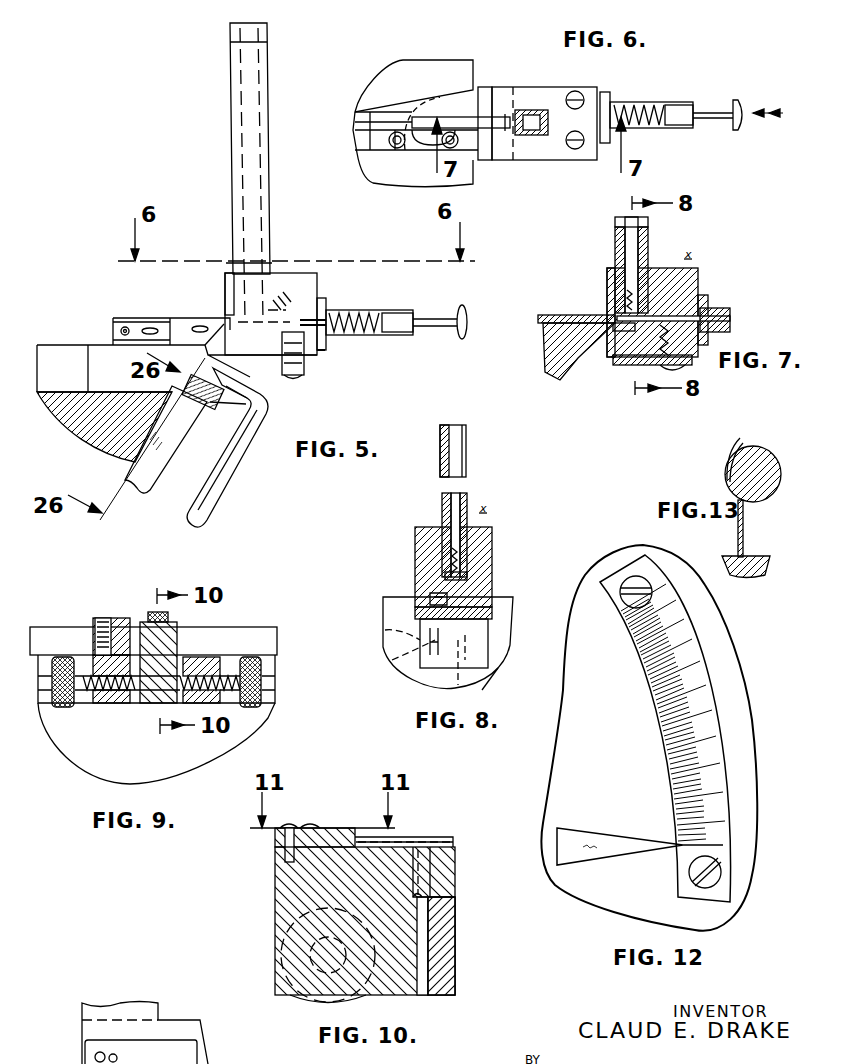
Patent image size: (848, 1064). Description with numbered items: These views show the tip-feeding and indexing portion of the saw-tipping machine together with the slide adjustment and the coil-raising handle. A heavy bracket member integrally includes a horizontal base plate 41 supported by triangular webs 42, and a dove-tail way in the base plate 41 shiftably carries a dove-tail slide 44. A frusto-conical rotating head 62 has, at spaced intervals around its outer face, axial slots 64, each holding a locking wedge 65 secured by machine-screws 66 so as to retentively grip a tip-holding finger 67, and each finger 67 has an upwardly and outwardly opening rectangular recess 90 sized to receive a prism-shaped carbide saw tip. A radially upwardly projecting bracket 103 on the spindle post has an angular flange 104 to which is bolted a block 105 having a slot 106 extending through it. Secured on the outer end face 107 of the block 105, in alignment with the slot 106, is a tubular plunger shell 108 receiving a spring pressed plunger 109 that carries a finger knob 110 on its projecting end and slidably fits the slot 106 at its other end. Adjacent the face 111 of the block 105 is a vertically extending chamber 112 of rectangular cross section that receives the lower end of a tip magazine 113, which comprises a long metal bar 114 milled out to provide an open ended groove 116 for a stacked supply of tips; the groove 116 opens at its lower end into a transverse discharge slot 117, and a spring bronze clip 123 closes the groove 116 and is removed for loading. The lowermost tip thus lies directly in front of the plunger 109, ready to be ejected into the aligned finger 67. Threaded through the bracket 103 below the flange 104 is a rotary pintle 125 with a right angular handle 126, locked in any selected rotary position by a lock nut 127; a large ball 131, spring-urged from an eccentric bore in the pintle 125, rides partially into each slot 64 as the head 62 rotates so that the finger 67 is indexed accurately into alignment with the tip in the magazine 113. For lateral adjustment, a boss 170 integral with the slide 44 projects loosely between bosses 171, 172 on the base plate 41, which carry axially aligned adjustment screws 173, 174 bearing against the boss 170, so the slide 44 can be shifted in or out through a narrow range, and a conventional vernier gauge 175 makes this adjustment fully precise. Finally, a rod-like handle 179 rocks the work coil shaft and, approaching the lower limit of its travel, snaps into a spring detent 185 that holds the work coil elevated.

In FIG. 9, the horizontal base plate 41 is at (270, 690).
In FIG. 10, the horizontal base plate 41 is at (456, 944).
In FIG. 9, the triangular webs 42 is at (232, 740).
In FIG. 9, the dove-tail slide 44 is at (270, 648).
In FIG. 10, the dove-tail slide 44 is at (454, 892).
In FIG. 5, the rotating head 62 is at (58, 425).
In FIG. 6, the rotating head 62 is at (420, 184).
In FIG. 7, the rotating head 62 is at (556, 382).
In FIG. 8, the rotating head 62 is at (508, 662).
In FIG. 5, the axial slots 64 is at (54, 348).
In FIG. 6, the axial slots 64 is at (360, 152).
In FIG. 8, the axial slots 64 is at (485, 688).
In FIG. 6, the locking wedge 65 is at (400, 148).
In FIG. 8, the locking wedge 65 is at (388, 640).
In FIG. 6, the machine-screws 66 is at (432, 124).
In FIG. 8, the machine-screws 66 is at (420, 660).
In FIG. 5, the tip-holding fingers 67 is at (140, 320).
In FIG. 6, the tip-holding fingers 67 is at (385, 114).
In FIG. 7, the tip-holding fingers 67 is at (540, 368).
In FIG. 8, the tip-holding fingers 67 is at (458, 684).
In FIG. 5, the rectangular recess 90 is at (212, 318).
In FIG. 6, the rectangular recess 90 is at (503, 114).
In FIG. 5, the bracket 103 is at (136, 491).
In FIG. 8, the bracket 103 is at (418, 680).
In FIG. 5, the angular flange 104 is at (304, 362).
In FIG. 6, the angular flange 104 is at (487, 160).
In FIG. 7, the angular flange 104 is at (618, 367).
In FIG. 8, the angular flange 104 is at (495, 614).
In FIG. 5, the block 105 is at (318, 288).
In FIG. 6, the block 105 is at (566, 160).
In FIG. 7, the block 105 is at (700, 278).
In FIG. 8, the block 105 is at (493, 541).
In FIG. 5, the slot 106 is at (322, 351).
In FIG. 5, the outer end face 107 is at (321, 303).
In FIG. 5, the tubular plunger shell 108 is at (403, 311).
In FIG. 5, the spring pressed plunger 109 is at (433, 330).
In FIG. 6, the spring pressed plunger 109 is at (710, 108).
In FIG. 7, the spring pressed plunger 109 is at (706, 318).
In FIG. 8, the spring pressed plunger 109 is at (470, 580).
In FIG. 5, the finger knob 110 is at (468, 313).
In FIG. 6, the finger knob 110 is at (741, 131).
In FIG. 5, the face 111 is at (225, 282).
In FIG. 5, the vertically extending chamber 112 is at (272, 284).
In FIG. 7, the vertically extending chamber 112 is at (617, 277).
In FIG. 5, the tip magazine 113 is at (272, 80).
In FIG. 8, the tip magazine 113 is at (486, 435).
In FIG. 6, the long metal bar 114 is at (572, 92).
In FIG. 7, the long metal bar 114 is at (616, 243).
In FIG. 8, the long metal bar 114 is at (441, 503).
In FIG. 5, the open ended groove 116 is at (270, 184).
In FIG. 6, the open ended groove 116 is at (535, 135).
In FIG. 7, the open ended groove 116 is at (641, 242).
In FIG. 8, the open ended groove 116 is at (462, 504).
In FIG. 7, the transverse discharge slot 117 is at (616, 331).
In FIG. 8, the transverse discharge slot 117 is at (428, 594).
In FIG. 6, the spring bronze clip 123 is at (533, 110).
In FIG. 7, the spring bronze clip 123 is at (616, 220).
In FIG. 8, the spring bronze clip 123 is at (468, 458).
In FIG. 5, the rotary pintle 125 is at (252, 440).
In FIG. 5, the right angular handle 126 is at (218, 502).
In FIG. 5, the lock nut 127 is at (209, 420).
In FIG. 5, the large ball 131 is at (197, 404).
In FIG. 9, the boss 170 is at (144, 708).
In FIG. 10, the boss 170 is at (280, 922).
In FIG. 9, the boss 171 is at (104, 708).
In FIG. 10, the boss 171 is at (420, 997).
In FIG. 9, the boss 172 is at (210, 656).
In FIG. 9, the adjustment screw 173 is at (70, 708).
In FIG. 10, the adjustment screw 173 is at (300, 996).
In FIG. 9, the adjustment screw 174 is at (230, 708).
In FIG. 12, the vernier gauge 175 is at (668, 748).
In FIG. 13, the rod-like handle 179 is at (760, 452).
In FIG. 13, the spring detent 185 is at (727, 466).